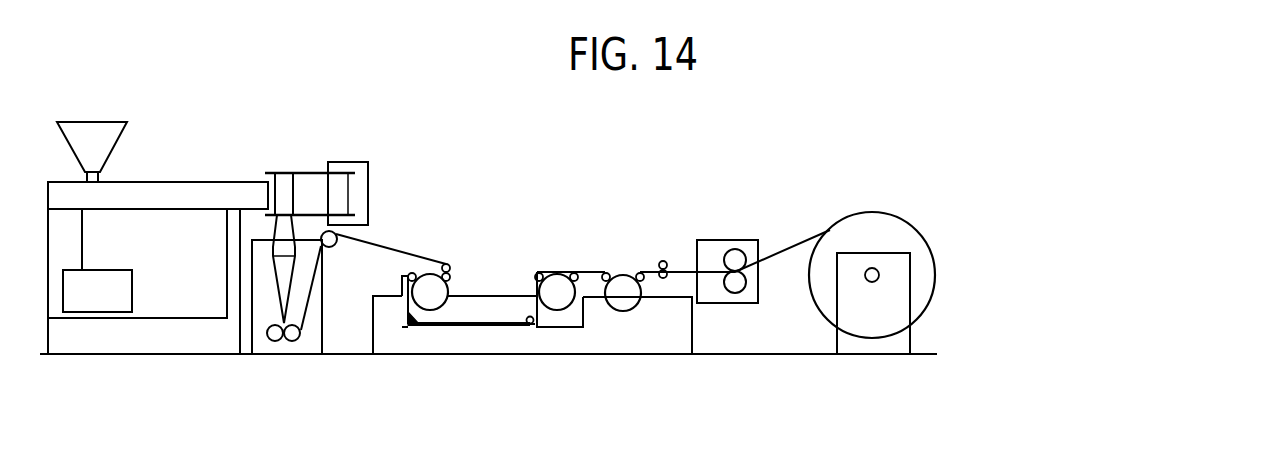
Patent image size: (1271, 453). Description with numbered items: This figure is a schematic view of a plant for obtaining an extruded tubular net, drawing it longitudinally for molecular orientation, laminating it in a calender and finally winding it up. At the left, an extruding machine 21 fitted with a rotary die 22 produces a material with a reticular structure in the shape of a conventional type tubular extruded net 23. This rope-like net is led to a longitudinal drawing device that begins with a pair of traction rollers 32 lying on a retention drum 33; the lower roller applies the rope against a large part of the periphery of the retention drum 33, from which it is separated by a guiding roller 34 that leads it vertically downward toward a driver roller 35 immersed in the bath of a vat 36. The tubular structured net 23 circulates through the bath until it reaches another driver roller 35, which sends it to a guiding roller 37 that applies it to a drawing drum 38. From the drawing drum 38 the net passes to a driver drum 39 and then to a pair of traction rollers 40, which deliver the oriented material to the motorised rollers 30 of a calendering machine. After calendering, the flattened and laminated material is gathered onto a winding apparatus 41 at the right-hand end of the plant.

The extruding machine 21 is at (205, 278).
The rotary die 22 is at (286, 195).
The tubular extruded net 23 is at (283, 278).
The motorised rollers 30 is at (735, 252).
The traction rollers 32 is at (448, 266).
The retention drum 33 is at (432, 297).
The guiding roller 34 is at (412, 272).
The driver roller 35 is at (403, 328).
The vat 36 is at (555, 322).
The guiding roller 37 is at (541, 277).
The drawing drum 38 is at (561, 297).
The driver drum 39 is at (623, 283).
The traction rollers 40 is at (663, 280).
The winding apparatus 41 is at (922, 273).